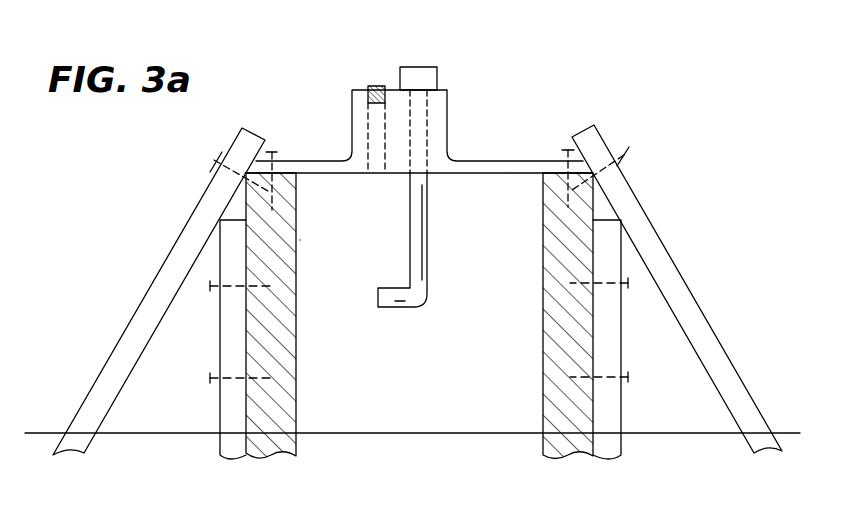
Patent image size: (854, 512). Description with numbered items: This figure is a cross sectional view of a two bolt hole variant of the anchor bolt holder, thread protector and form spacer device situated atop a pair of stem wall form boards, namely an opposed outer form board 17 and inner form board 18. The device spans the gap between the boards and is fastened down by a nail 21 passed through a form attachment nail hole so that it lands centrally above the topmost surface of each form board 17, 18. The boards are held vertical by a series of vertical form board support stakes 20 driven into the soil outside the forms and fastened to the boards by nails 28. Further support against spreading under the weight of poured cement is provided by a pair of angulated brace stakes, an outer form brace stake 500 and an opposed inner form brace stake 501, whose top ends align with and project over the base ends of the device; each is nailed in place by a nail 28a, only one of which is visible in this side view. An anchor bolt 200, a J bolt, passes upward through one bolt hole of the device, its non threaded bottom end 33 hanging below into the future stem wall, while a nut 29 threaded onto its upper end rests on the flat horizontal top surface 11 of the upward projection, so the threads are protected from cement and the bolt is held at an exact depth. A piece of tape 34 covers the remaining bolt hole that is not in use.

The flat horizontal top surface 11 is at (443, 82).
The outer form board 17 is at (295, 348).
The inner form board 18 is at (545, 348).
The vertical form board support stake 20 is at (235, 355).
The nail 21 is at (274, 152).
The nail 28 is at (210, 378).
The nail 28a is at (215, 166).
The nut 29 is at (438, 73).
The non threaded bottom end 33 is at (429, 285).
The piece of tape 34 is at (374, 86).
The anchor bolt 200 is at (394, 193).
The outer form brace stake 500 is at (182, 243).
The inner form brace stake 501 is at (657, 243).